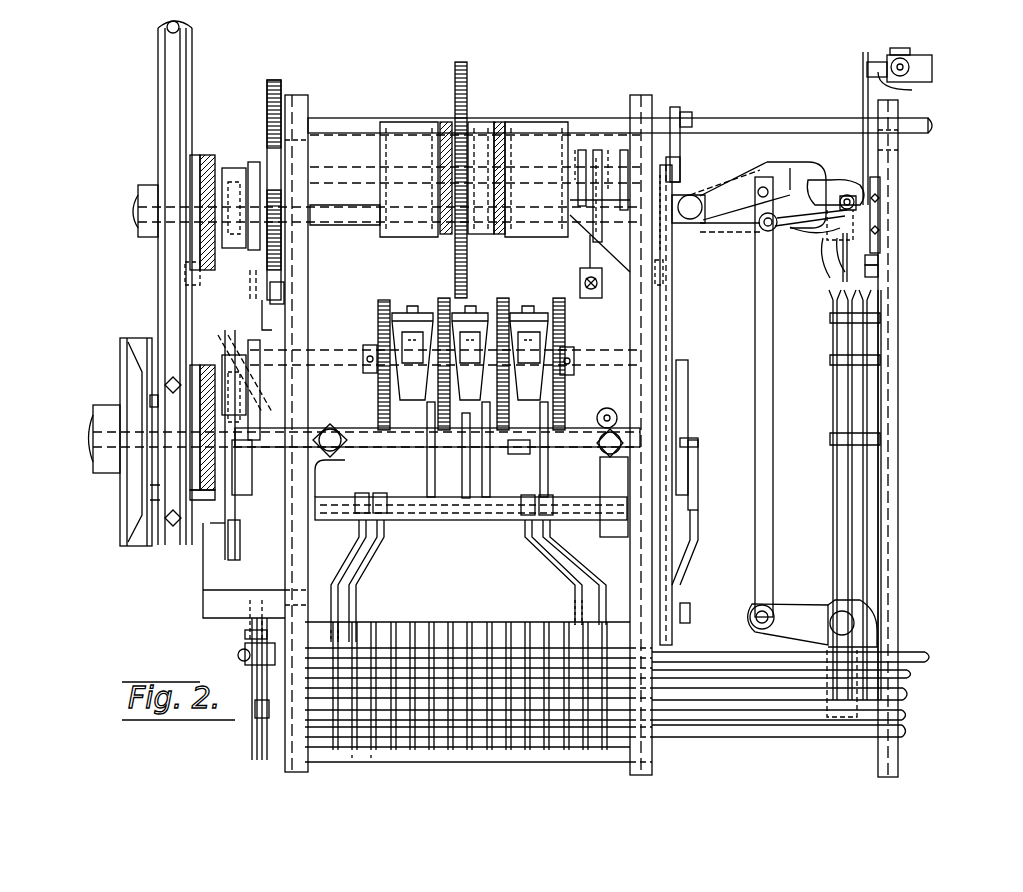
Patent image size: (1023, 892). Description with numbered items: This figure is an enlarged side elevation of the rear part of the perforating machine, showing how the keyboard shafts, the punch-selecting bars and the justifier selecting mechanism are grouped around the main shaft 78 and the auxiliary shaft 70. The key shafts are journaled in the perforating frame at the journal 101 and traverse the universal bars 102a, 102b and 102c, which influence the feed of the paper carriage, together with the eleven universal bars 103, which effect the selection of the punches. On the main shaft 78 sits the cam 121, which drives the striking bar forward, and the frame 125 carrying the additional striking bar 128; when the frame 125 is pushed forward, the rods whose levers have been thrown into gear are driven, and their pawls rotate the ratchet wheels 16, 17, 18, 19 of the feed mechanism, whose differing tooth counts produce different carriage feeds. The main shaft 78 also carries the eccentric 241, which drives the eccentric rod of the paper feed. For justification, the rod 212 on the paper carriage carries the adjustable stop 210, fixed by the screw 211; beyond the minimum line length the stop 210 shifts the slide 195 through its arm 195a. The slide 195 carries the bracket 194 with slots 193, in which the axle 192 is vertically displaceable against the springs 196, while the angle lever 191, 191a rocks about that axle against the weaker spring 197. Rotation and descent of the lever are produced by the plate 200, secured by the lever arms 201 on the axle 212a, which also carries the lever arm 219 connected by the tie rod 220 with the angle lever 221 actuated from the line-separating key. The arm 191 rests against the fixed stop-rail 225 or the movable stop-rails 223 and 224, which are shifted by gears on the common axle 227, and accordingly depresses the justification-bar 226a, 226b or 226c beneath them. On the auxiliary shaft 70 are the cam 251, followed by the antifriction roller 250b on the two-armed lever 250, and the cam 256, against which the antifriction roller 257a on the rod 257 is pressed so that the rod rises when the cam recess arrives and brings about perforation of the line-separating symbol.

The auxiliary shaft 70 is at (152, 218).
The main shaft 78 is at (135, 452).
The cam 256 is at (270, 160).
The rod 257 is at (278, 320).
The antifriction roller 257a is at (285, 298).
The ratchet wheel 16 is at (380, 312).
The ratchet wheel 17 is at (443, 302).
The ratchet wheel 18 is at (502, 302).
The ratchet wheel 19 is at (558, 302).
The frame 125 is at (338, 428).
The cam 121 is at (466, 455).
The additional striking bar 128 is at (528, 447).
The cam 251 is at (680, 275).
The two-armed lever 250 is at (683, 112).
The antifriction roller 250b is at (680, 168).
The axle 212a is at (692, 200).
The lever arms 201 is at (748, 162).
The plate 200 is at (808, 172).
The angle lever arm 191a is at (818, 195).
The axle 192 is at (858, 212).
The bracket 194 is at (856, 200).
The slide 195 is at (882, 212).
The arm 195a is at (863, 96).
The screw 211 is at (910, 50).
The rod 212 is at (908, 66).
The adjustable stop 210 is at (900, 85).
The lever arm 219 is at (724, 212).
The axle 227 is at (744, 228).
The spring 197 is at (792, 218).
The springs 196 is at (812, 222).
The slots 193 is at (830, 222).
The angle lever arm 191 is at (826, 268).
The fixed stop-rail 225 is at (880, 258).
The movable stop-rail 224 is at (880, 270).
The movable stop-rail 223 is at (880, 280).
The justification-bar 226a is at (840, 340).
The justification-bar 226b is at (852, 362).
The justification-bar 226c is at (868, 380).
The tie rod 220 is at (772, 350).
The eccentric 241 is at (688, 410).
The angle lever 221 is at (790, 612).
The journal 101 is at (292, 742).
The universal bar 102a is at (335, 752).
The universal bar 102b is at (585, 752).
The universal bar 102c is at (352, 752).
The universal bars 103 is at (488, 752).